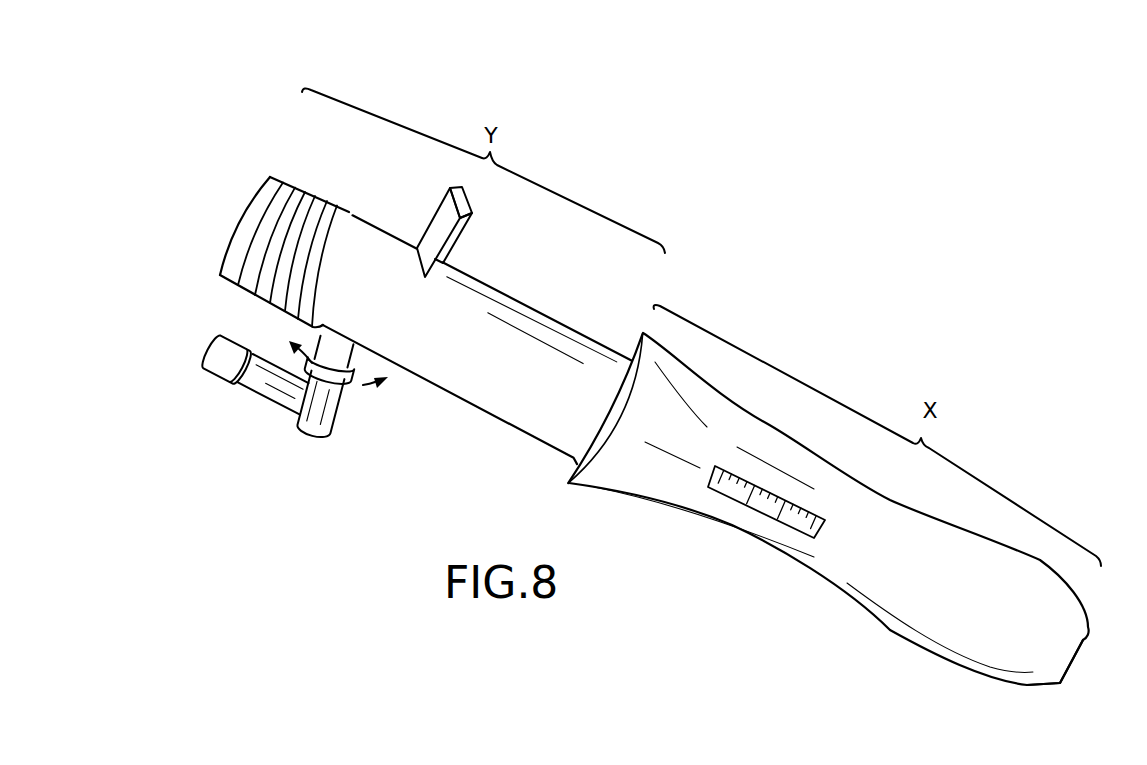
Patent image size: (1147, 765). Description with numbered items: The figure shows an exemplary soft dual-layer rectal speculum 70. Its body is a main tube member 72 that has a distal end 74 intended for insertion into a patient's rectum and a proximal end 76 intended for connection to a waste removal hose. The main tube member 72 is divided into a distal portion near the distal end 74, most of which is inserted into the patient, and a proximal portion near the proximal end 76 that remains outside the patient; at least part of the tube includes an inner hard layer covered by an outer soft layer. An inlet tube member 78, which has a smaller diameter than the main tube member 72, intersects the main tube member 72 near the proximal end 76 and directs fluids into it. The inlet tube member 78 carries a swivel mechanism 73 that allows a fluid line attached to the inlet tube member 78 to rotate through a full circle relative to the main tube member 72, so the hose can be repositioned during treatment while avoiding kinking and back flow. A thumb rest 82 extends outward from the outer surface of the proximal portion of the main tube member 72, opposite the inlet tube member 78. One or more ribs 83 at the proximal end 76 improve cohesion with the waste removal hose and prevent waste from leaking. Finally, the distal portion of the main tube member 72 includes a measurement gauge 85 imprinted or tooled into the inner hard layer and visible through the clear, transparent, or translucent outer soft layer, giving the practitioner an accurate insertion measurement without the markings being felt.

The rectal speculum 70 is at (722, 166).
The main tube member 72 is at (552, 298).
The swivel mechanism 73 is at (276, 421).
The distal end 74 is at (1080, 648).
The proximal end 76 is at (248, 210).
The inlet tube member 78 is at (219, 377).
The thumb rest 82 is at (473, 205).
The ribs 83 is at (323, 193).
The measurement gauge 85 is at (752, 510).